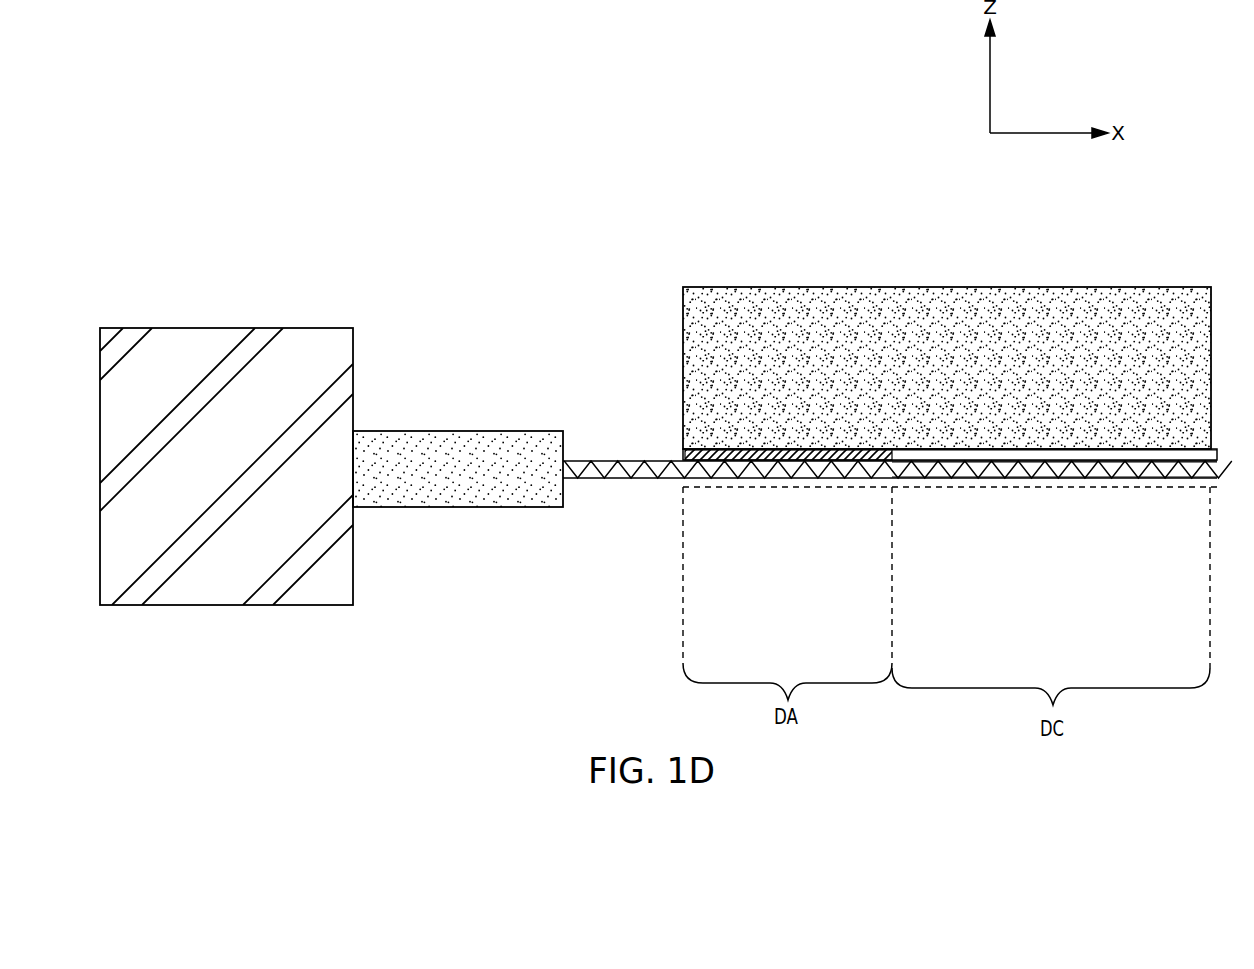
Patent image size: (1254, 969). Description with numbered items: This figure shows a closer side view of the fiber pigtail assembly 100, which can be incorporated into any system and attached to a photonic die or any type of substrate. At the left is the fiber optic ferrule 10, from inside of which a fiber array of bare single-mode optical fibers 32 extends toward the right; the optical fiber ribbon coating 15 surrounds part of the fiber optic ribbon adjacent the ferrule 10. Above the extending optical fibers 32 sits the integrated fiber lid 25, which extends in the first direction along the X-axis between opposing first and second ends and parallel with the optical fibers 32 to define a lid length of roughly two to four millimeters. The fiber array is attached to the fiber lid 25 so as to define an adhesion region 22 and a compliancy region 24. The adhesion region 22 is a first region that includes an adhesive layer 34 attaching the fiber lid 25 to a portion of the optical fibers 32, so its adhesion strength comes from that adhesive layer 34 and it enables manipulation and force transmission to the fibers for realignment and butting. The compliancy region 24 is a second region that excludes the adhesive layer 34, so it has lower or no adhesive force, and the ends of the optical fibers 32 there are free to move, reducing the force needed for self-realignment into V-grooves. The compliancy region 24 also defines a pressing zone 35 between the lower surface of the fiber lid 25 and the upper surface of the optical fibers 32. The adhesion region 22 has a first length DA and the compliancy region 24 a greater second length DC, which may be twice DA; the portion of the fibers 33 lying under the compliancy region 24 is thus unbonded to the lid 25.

The fiber pigtail assembly 100 is at (332, 208).
The fiber optic ferrule 10 is at (222, 346).
The optical fiber ribbon coating 15 is at (450, 432).
The optical fibers 32 is at (624, 461).
The waveguide layer portion 33 is at (1115, 478).
The adhesive layer 34 is at (703, 452).
The adhesion region 22 is at (827, 488).
The compliancy region 24 is at (1058, 488).
The fiber lid 25 is at (808, 295).
The pressing zone 35 is at (1095, 455).